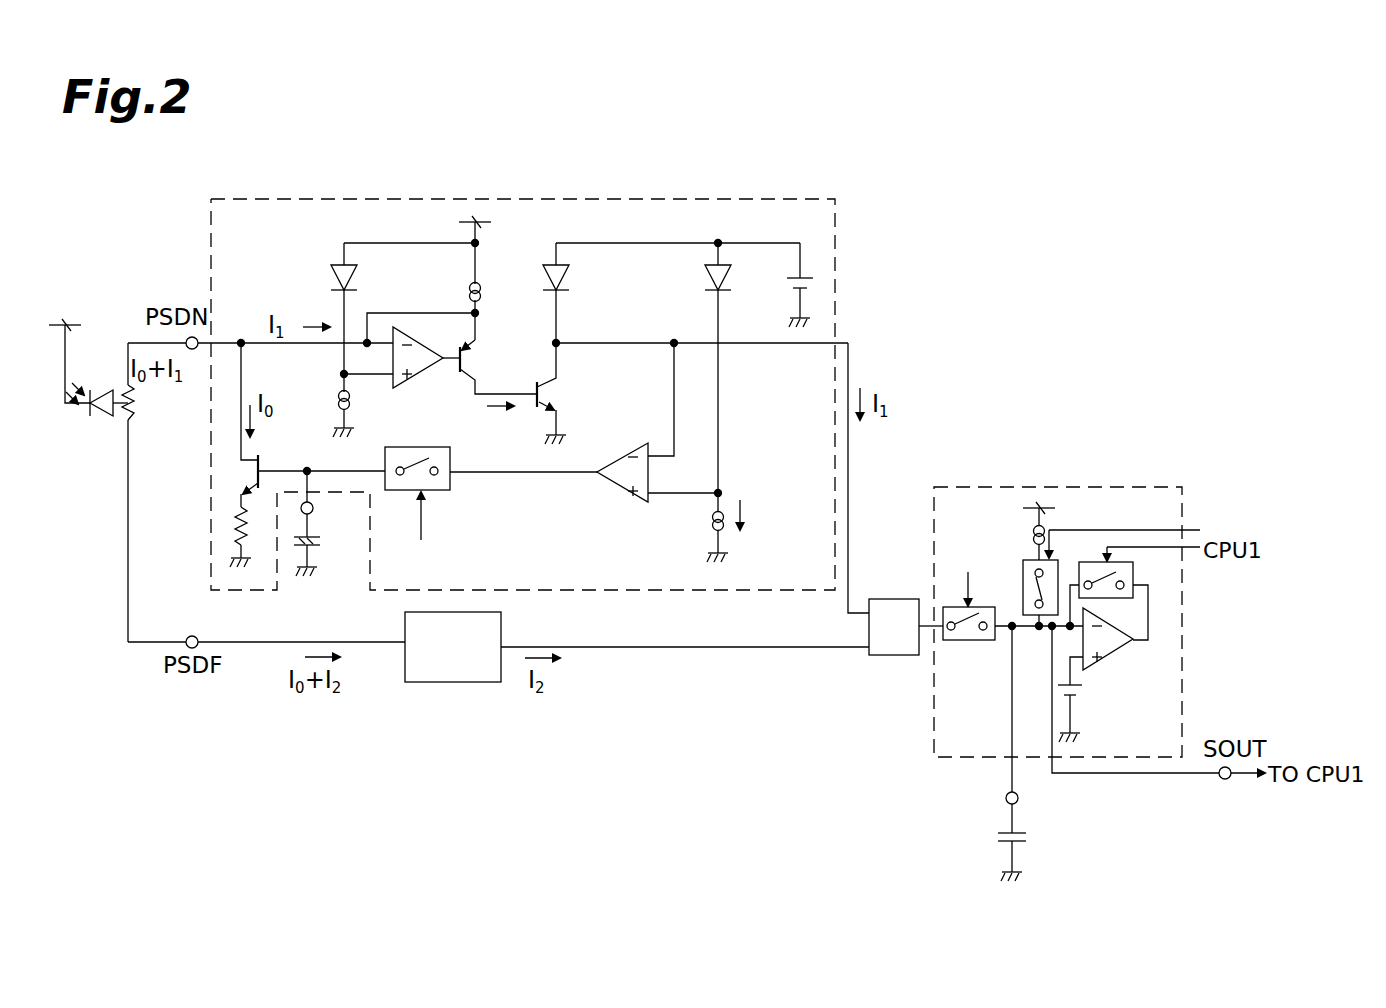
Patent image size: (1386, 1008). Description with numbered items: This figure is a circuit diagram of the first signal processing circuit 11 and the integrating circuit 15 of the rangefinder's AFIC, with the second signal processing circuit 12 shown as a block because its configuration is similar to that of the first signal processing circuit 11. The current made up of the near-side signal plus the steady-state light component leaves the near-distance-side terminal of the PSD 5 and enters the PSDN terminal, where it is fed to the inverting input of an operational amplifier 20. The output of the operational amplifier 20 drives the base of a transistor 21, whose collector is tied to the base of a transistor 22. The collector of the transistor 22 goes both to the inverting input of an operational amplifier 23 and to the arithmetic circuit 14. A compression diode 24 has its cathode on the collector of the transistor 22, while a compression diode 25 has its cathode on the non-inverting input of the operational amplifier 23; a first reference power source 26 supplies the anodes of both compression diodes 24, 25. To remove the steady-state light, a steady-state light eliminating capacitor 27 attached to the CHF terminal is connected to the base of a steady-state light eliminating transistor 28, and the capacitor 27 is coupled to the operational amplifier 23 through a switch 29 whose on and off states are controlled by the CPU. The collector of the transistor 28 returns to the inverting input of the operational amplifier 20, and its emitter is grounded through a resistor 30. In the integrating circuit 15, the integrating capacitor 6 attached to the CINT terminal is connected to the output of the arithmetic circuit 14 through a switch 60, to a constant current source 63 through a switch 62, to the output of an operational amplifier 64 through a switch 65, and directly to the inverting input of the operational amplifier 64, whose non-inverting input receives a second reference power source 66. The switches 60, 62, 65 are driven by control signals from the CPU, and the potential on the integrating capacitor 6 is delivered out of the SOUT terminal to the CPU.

The PSD 5 is at (100, 392).
The integrating capacitor 6 is at (1028, 835).
The first signal processing circuit 11 is at (440, 199).
The second signal processing circuit 12 is at (443, 683).
The arithmetic circuit 14 is at (899, 599).
The integrating circuit 15 is at (1115, 487).
The operational amplifier 20 is at (425, 383).
The transistor 21 is at (470, 380).
The transistor 22 is at (540, 413).
The operational amplifier 23 is at (622, 487).
The compression diode 24 is at (545, 275).
The compression diode 25 is at (705, 283).
The first reference power source 26 is at (808, 278).
The steady-state light eliminating capacitor 27 is at (322, 540).
The steady-state light eliminating transistor 28 is at (262, 458).
The switch 29 is at (452, 487).
The resistor 30 is at (237, 527).
The switch 60 is at (977, 641).
The switch 62 is at (1025, 560).
The constant current source 63 is at (1055, 526).
The operational amplifier 64 is at (1112, 655).
The switch 65 is at (1133, 575).
The second reference power source 66 is at (1084, 686).